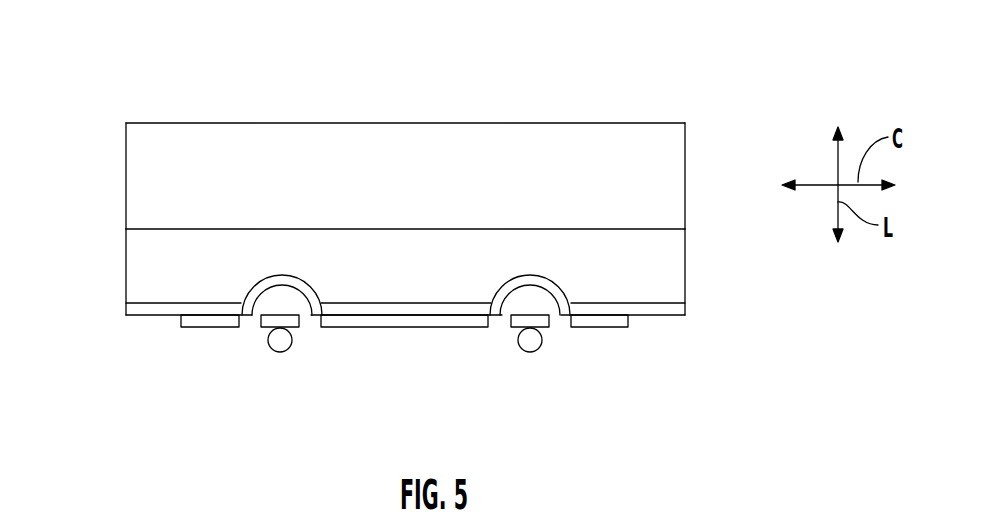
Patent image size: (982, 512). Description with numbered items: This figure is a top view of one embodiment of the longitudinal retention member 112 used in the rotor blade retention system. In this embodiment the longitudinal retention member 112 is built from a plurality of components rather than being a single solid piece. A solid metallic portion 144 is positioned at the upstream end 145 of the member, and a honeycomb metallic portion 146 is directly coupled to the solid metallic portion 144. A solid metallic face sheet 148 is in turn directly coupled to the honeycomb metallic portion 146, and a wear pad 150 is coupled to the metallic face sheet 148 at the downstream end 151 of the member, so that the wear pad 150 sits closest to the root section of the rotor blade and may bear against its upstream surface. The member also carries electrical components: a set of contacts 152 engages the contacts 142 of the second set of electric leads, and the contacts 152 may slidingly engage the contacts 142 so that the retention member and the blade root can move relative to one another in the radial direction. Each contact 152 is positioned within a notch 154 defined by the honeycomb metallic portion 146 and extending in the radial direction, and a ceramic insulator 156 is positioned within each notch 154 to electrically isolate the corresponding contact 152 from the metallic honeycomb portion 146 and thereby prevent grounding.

The longitudinal retention member 112 is at (101, 72).
The contacts 142 is at (280, 352).
The solid metallic portion 144 is at (247, 140).
The upstream end 145 is at (482, 58).
The honeycomb metallic portion 146 is at (147, 265).
The solid metallic face sheet 148 is at (405, 303).
The wear pad 150 is at (214, 327).
The downstream end 151 is at (352, 362).
The contacts 152 is at (284, 312).
The notch 154 is at (288, 281).
The ceramic insulator 156 is at (268, 275).